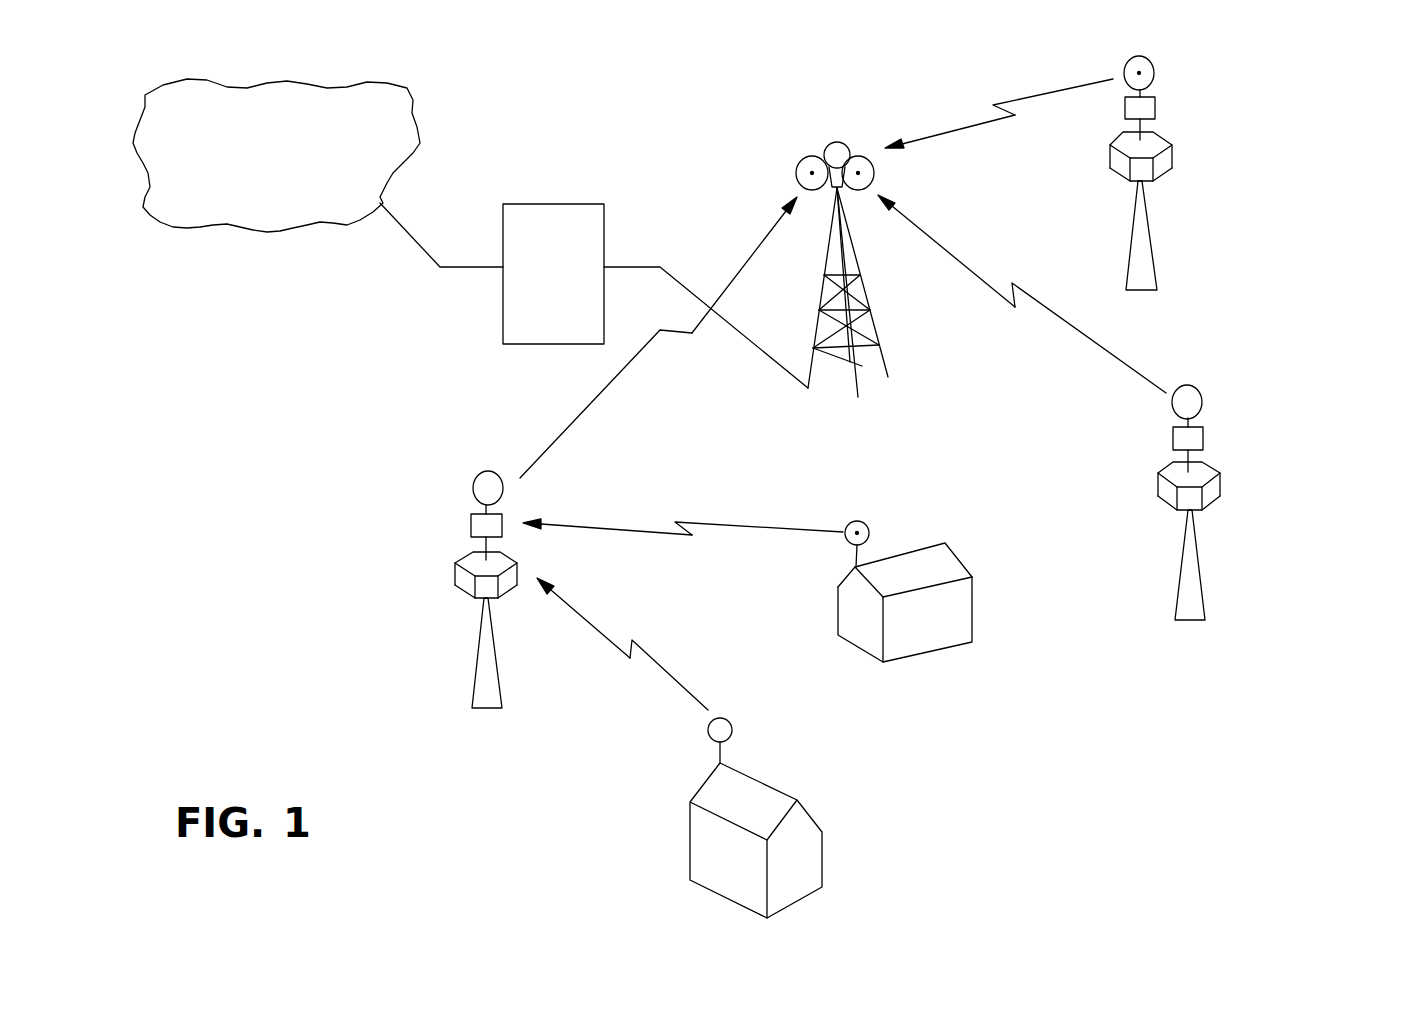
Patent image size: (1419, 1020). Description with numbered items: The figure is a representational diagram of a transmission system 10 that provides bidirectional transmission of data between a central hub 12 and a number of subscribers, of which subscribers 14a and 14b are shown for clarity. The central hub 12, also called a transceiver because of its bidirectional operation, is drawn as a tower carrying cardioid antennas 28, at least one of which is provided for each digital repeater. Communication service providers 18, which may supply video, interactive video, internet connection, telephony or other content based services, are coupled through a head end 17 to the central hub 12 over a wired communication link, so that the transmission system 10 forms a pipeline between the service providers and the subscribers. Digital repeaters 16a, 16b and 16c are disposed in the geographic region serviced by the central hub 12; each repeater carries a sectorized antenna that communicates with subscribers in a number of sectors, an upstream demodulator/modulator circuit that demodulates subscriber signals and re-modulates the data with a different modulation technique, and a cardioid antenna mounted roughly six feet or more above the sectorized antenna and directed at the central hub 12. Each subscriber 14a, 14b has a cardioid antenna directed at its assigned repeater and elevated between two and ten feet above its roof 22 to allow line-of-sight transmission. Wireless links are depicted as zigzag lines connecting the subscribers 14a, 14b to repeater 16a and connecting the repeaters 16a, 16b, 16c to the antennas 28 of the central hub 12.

The transmission system 10 is at (1340, 122).
The central hub 12 is at (900, 330).
The subscriber 14a is at (968, 582).
The subscriber 14b is at (819, 797).
The digital repeater 16a is at (440, 571).
The digital repeater 16b is at (1241, 486).
The digital repeater 16c is at (1190, 155).
The head end 17 is at (553, 204).
The communication service providers 18 is at (408, 91).
The roof 22 is at (953, 549).
The cardioid antenna 28 is at (848, 144).